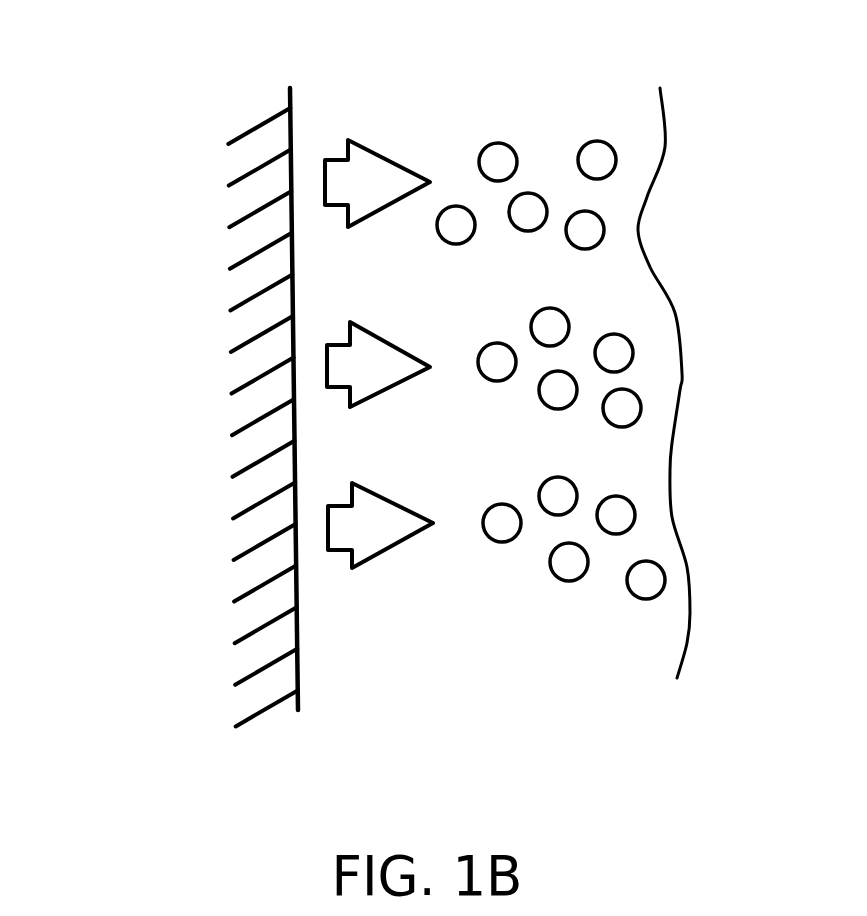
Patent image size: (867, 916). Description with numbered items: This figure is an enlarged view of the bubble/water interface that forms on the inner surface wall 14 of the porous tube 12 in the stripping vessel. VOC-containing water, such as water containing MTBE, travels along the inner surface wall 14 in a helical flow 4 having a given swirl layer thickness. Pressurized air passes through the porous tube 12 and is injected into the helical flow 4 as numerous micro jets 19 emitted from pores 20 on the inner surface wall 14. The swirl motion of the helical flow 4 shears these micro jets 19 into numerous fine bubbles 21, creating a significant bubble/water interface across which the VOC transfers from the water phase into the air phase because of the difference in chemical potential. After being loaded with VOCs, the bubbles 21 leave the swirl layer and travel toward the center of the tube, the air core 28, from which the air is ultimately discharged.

The helical flow 4 is at (518, 92).
The porous tube 12 is at (262, 135).
The inner surface wall 14 is at (292, 125).
The micro jets 19 is at (330, 383).
The pores 20 is at (290, 368).
The fine bubbles 21 is at (585, 233).
The air core 28 is at (752, 355).